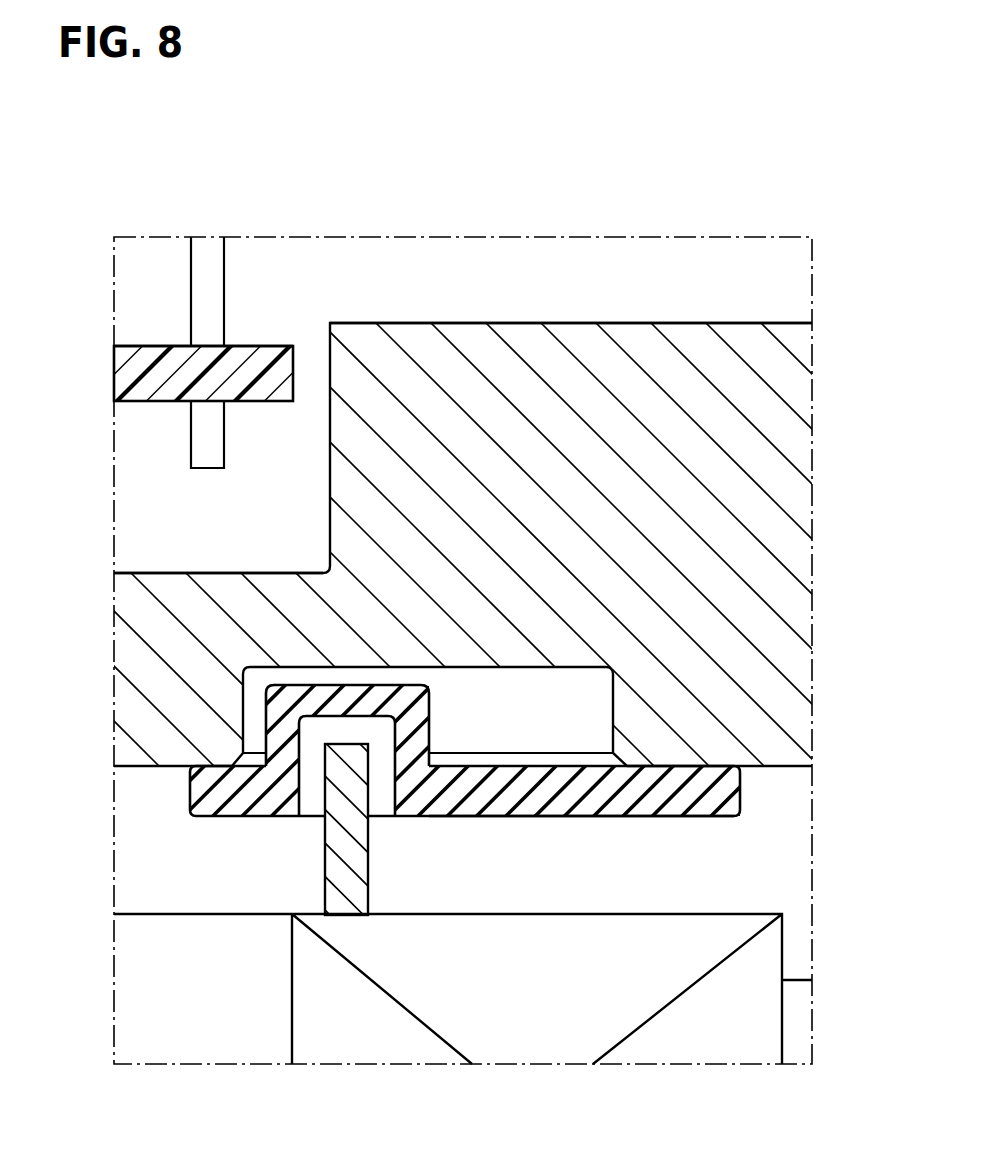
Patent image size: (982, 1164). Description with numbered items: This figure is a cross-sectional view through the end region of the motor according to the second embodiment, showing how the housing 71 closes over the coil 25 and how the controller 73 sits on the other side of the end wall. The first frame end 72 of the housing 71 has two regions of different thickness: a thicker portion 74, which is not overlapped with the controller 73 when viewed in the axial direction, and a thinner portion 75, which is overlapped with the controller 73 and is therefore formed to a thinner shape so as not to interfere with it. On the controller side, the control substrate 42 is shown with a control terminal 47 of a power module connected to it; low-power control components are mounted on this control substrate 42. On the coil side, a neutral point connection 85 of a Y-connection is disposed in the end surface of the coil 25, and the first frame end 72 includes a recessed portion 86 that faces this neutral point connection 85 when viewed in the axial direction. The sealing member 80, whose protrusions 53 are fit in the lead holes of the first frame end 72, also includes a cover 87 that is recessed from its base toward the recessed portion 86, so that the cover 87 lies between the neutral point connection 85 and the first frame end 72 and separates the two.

The coil 25 is at (770, 949).
The control substrate 42 is at (130, 370).
The control terminal 47 is at (190, 444).
The protrusion 53 is at (481, 795).
The housing 71 is at (608, 322).
The first frame end 72 is at (785, 323).
The controller 73 is at (268, 344).
The thicker portion 74 is at (777, 481).
The thinner portion 75 is at (128, 632).
The sealing member 80 is at (583, 820).
The neutral point connection 85 is at (338, 867).
The recessed portion 86 is at (573, 667).
The cover 87 is at (280, 701).